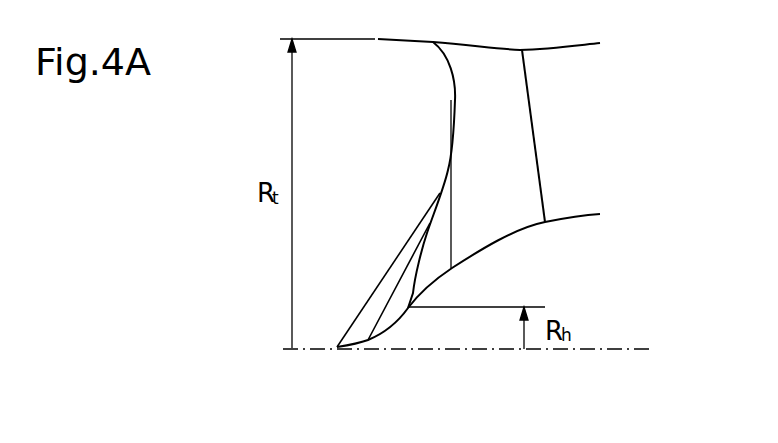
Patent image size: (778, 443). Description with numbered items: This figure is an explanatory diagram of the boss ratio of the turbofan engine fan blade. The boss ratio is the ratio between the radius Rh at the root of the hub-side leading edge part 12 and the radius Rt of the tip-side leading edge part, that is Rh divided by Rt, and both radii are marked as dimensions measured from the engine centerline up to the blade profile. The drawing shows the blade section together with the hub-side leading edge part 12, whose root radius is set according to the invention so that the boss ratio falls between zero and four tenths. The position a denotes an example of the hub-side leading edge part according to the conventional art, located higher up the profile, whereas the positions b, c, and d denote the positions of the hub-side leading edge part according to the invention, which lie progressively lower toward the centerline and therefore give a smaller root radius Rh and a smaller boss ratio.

The hub-side leading edge part 12 is at (412, 270).
The conventional hub-side leading edge part position a is at (451, 268).
The hub-side leading edge part position according to the invention b is at (410, 310).
The hub-side leading edge part position according to the invention c is at (368, 341).
The hub-side leading edge part position according to the invention d is at (337, 347).